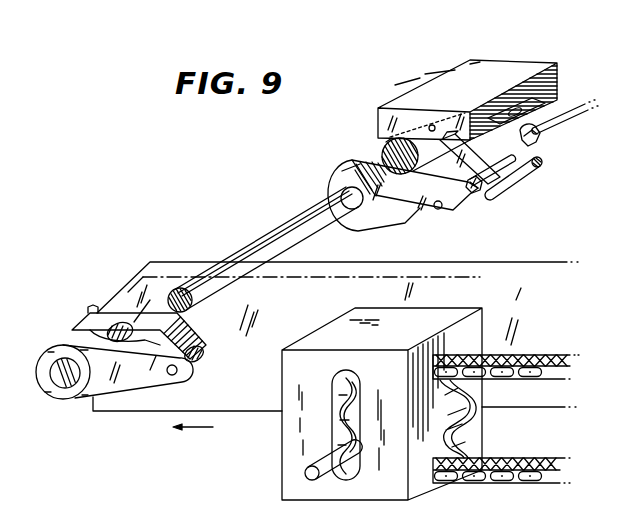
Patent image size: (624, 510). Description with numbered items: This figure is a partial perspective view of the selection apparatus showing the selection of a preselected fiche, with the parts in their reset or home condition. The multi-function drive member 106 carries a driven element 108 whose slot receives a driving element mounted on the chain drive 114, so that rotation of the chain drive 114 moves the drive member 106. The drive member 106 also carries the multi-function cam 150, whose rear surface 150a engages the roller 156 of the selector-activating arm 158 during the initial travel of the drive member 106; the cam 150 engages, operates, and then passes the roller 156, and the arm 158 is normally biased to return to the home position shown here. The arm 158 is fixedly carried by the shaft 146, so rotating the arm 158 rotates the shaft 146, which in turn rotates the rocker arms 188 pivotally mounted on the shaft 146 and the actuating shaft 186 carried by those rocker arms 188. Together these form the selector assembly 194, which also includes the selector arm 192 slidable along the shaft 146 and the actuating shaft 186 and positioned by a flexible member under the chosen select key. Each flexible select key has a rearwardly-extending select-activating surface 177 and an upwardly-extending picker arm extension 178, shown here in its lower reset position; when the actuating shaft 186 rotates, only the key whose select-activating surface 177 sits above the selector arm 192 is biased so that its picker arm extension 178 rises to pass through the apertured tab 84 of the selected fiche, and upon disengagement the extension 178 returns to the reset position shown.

The apertured tab 84 is at (540, 110).
The multi-function drive member 106 is at (522, 244).
The driven element 108 is at (282, 470).
The chain drive 114 is at (528, 354).
The shaft 146 is at (267, 239).
The multi-function cam 150 is at (97, 313).
The rear surface 150a is at (137, 322).
The roller 156 is at (183, 371).
The selector-activating arm 158 is at (123, 393).
The select-activating surface 177 is at (567, 125).
The picker arm extension 178 is at (538, 143).
The actuating shaft 186 is at (478, 188).
The rocker arms 188 is at (410, 215).
The selector arm 192 is at (508, 187).
The selector assembly 194 is at (340, 170).